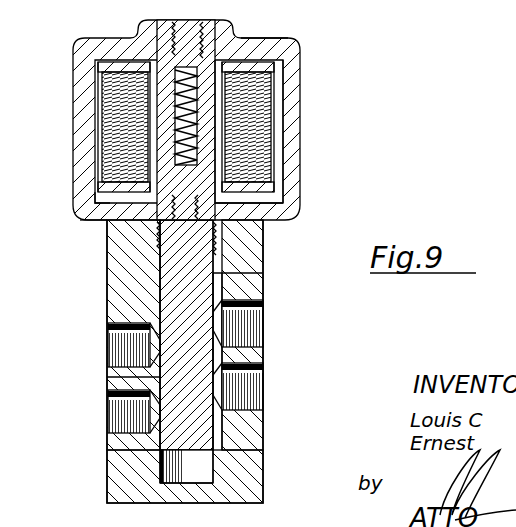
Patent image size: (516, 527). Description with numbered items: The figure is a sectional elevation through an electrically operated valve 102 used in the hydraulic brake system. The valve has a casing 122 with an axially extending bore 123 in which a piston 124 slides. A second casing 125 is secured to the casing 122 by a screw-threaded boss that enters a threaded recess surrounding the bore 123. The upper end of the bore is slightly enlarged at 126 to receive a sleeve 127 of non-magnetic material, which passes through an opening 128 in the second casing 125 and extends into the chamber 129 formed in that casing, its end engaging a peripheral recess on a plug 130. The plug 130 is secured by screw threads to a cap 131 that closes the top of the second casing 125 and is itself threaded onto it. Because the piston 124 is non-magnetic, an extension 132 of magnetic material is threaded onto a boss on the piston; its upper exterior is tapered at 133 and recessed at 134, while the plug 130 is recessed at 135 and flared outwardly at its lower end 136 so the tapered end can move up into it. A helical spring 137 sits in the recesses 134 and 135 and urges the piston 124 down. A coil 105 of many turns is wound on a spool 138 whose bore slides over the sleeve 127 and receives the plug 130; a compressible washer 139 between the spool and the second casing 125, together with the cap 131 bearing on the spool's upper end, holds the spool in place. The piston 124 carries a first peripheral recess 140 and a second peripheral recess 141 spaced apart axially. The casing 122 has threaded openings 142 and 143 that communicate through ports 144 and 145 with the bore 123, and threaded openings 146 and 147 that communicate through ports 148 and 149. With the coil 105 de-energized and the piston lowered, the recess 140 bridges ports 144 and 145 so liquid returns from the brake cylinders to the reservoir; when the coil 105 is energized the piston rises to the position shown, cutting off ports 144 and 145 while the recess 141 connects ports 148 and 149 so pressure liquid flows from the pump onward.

The electrically operated valve 102 is at (328, 168).
The coil 105 is at (100, 133).
The casing 122 is at (260, 260).
The bore 123 is at (263, 273).
The piston 124 is at (175, 270).
The second casing 125 is at (293, 103).
The enlarged end of bore 126 is at (157, 252).
The sleeve 127 is at (150, 243).
The opening 128 is at (103, 213).
The chamber 129 is at (297, 140).
The plug 130 is at (217, 35).
The cap 131 is at (263, 47).
The extension 132 is at (300, 183).
The tapered end 133 is at (297, 122).
The recess 134 is at (297, 155).
The recess 135 is at (297, 73).
The flared lower end 136 is at (296, 83).
The helical spring 137 is at (103, 100).
The spool 138 is at (110, 187).
The compressible washer 139 is at (92, 196).
The first peripherally extending recess 140 is at (210, 288).
The second peripherally extending recess 141 is at (210, 379).
The threaded opening 142 is at (263, 336).
The threaded opening 143 is at (108, 333).
The port 144 is at (263, 315).
The port 145 is at (153, 352).
The threaded opening 146 is at (120, 410).
The threaded opening 147 is at (260, 400).
The port 148 is at (153, 418).
The port 149 is at (262, 372).